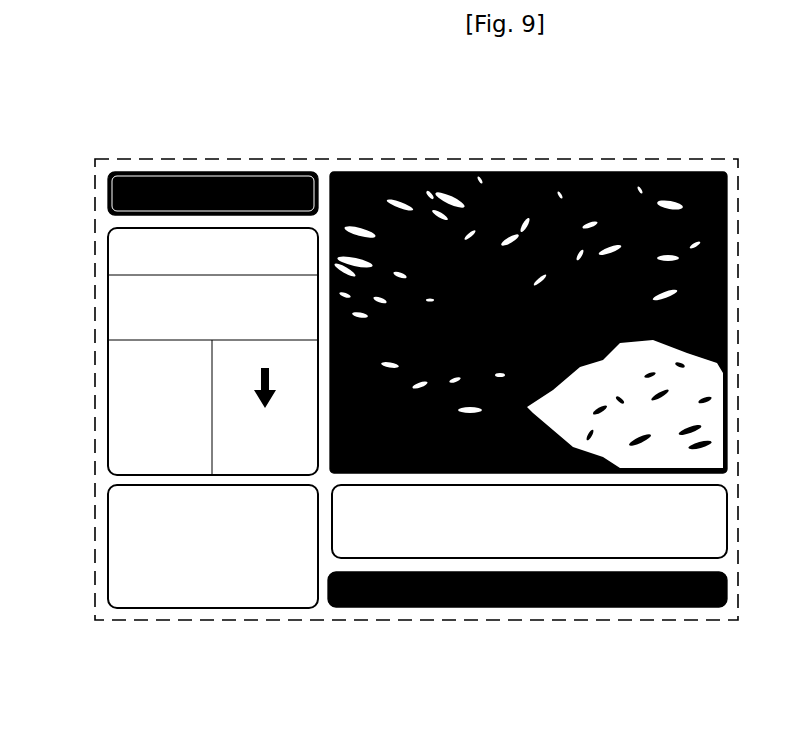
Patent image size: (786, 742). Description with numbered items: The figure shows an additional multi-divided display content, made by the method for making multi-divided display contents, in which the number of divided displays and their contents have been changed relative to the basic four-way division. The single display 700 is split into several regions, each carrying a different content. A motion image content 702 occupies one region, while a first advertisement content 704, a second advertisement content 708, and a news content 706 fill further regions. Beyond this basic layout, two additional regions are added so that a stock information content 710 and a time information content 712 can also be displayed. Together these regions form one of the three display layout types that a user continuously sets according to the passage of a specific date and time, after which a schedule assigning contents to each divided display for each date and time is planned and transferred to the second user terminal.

The display 700 is at (417, 157).
The motion image content 702 is at (528, 175).
The advertisement content 1 704 is at (357, 533).
The news content 706 is at (692, 607).
The advertisement content 2 708 is at (172, 610).
The stock information content 710 is at (135, 353).
The time information content 712 is at (163, 177).